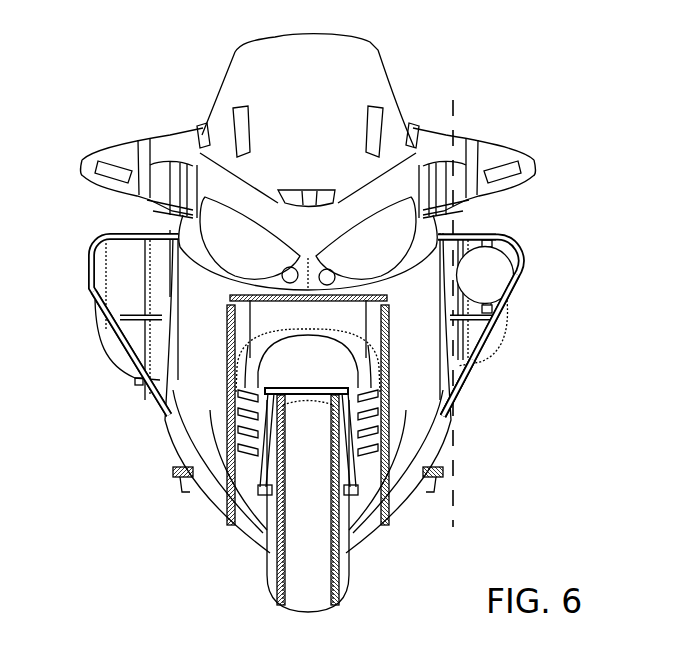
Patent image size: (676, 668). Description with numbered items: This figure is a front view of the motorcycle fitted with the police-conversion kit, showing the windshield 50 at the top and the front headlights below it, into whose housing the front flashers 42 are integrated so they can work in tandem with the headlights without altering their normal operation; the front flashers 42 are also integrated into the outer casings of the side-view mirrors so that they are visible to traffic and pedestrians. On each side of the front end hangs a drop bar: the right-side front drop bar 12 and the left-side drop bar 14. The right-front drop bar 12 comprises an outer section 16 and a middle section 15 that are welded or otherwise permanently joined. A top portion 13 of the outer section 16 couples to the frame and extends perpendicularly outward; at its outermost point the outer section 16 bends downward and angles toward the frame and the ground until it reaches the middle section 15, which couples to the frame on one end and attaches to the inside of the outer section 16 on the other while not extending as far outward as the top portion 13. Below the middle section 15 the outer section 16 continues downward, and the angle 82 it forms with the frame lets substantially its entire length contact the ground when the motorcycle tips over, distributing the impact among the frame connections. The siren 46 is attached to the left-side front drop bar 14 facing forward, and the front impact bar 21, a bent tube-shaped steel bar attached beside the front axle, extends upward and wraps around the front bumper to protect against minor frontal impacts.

The right-side front drop bar 12 is at (107, 236).
The top portion 13 is at (135, 235).
The left-side drop bar 14 is at (500, 235).
The middle section 15 is at (137, 317).
The outer section 16 is at (128, 343).
The front impact bar 21 is at (287, 390).
The front flashers 42 is at (336, 277).
The siren 46 is at (493, 279).
The windshield 50 is at (343, 80).
The angle 82 is at (461, 366).